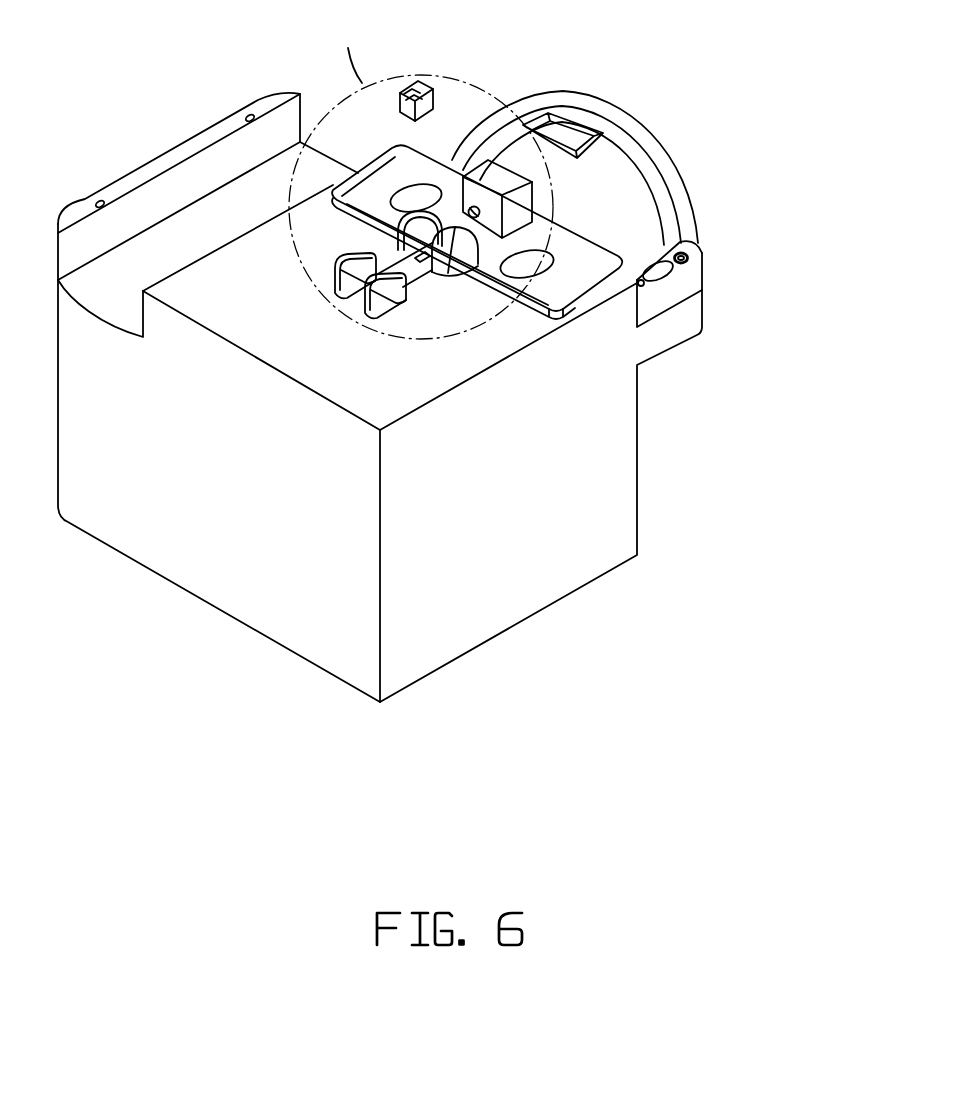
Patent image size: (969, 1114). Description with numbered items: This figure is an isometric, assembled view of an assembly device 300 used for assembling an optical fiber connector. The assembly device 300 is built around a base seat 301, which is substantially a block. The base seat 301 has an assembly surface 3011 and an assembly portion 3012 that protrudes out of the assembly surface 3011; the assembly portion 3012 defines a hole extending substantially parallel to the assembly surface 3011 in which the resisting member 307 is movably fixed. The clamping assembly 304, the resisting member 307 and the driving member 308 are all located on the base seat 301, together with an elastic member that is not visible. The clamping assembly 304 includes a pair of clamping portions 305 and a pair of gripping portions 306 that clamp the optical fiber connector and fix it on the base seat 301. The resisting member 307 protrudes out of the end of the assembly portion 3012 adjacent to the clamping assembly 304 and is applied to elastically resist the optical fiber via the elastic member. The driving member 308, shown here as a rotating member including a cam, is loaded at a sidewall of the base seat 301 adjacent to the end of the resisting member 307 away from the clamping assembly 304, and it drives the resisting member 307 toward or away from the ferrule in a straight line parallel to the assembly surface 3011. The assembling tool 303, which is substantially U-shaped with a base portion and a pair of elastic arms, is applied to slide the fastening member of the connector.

The assembly device 300 is at (156, 66).
The base seat 301 is at (575, 377).
The assembly surface 3011 is at (407, 380).
The assembly portion 3012 is at (489, 174).
The assembling tool 303 is at (428, 82).
The clamping assembly 304 is at (787, 180).
The clamping portions 305 is at (462, 244).
The gripping portions 306 is at (700, 253).
The resisting member 307 is at (546, 203).
The driving member 308 is at (565, 100).